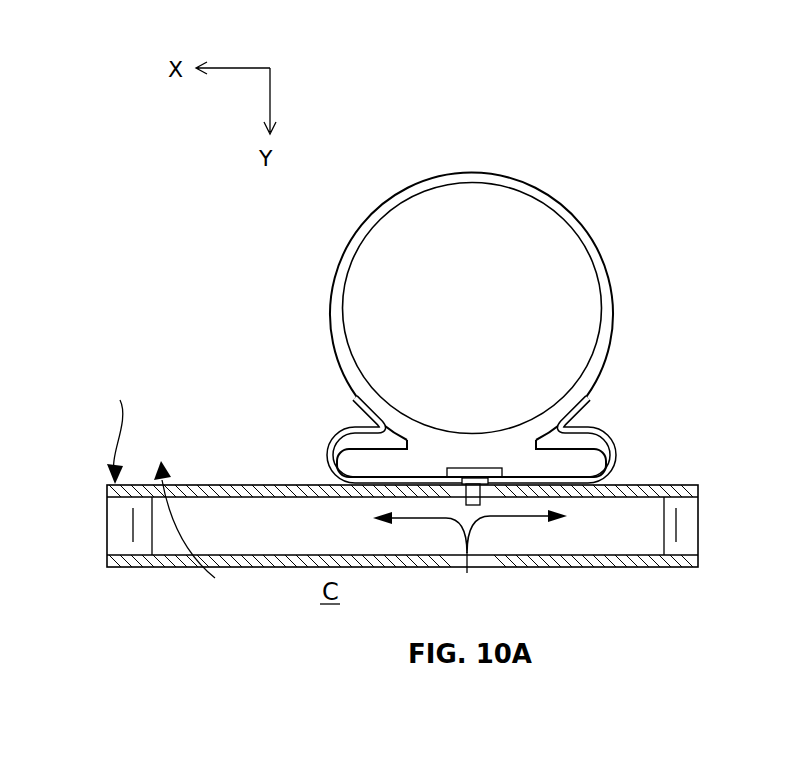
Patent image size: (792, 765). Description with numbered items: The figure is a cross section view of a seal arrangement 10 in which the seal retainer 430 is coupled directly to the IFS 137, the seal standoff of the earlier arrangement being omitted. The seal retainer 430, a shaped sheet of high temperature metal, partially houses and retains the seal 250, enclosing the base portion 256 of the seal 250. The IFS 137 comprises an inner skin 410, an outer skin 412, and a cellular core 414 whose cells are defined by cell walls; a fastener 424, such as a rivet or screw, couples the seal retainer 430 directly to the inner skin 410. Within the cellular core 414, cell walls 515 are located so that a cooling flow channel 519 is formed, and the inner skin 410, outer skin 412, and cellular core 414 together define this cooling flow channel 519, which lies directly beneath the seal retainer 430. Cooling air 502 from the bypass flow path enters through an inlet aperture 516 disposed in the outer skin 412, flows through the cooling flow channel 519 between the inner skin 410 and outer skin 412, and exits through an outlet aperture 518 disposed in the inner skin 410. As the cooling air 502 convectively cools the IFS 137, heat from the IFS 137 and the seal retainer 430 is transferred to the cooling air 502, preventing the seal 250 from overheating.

The seal arrangement 10 is at (592, 154).
The seal 250 is at (434, 174).
The seal retainer 430 is at (596, 438).
The base portion 256 is at (592, 461).
The fastener 424 is at (470, 466).
The inner skin 410 is at (700, 487).
The outer skin 412 is at (699, 564).
The cellular core 414 is at (690, 528).
The cell walls 515 is at (150, 527).
The outlet aperture 518 is at (202, 530).
The IFS 137 is at (111, 429).
The cooling air 502 is at (218, 516).
The inlet aperture 516 is at (453, 556).
The cooling flow channel 519 is at (352, 541).